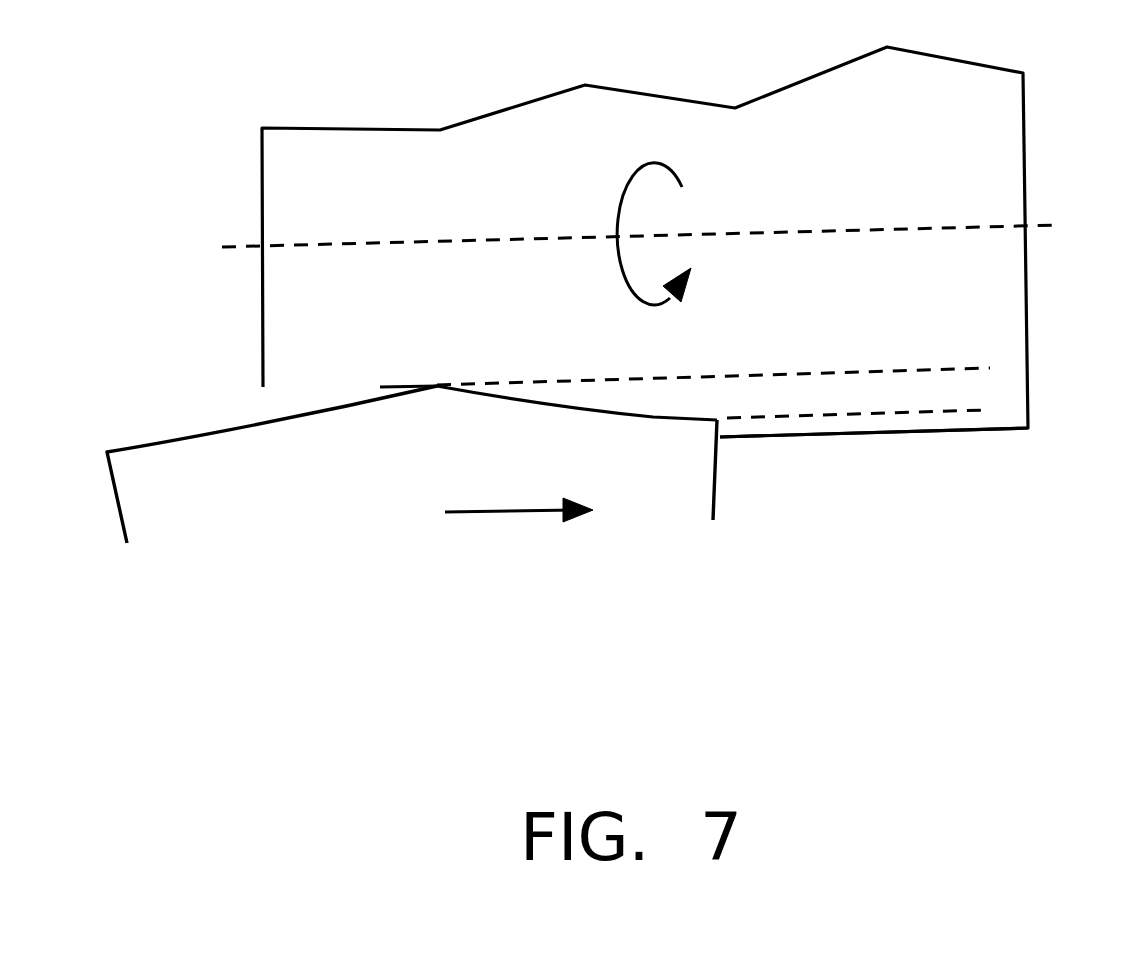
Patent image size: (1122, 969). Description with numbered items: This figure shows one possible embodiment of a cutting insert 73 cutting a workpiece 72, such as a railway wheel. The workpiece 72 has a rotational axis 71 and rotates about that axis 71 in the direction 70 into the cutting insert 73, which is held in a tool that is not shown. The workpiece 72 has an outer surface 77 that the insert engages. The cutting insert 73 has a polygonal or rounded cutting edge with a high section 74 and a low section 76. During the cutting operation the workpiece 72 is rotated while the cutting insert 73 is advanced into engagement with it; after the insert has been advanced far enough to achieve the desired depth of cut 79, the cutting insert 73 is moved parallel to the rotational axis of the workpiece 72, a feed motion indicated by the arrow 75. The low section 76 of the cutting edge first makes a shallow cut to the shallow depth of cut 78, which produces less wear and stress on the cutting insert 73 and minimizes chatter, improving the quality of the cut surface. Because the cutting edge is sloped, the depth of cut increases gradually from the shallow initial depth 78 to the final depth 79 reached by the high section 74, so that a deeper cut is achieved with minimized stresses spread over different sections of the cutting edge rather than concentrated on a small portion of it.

The direction of rotation 70 is at (612, 220).
The rotational axis 71 is at (245, 248).
The workpiece 72 is at (263, 304).
The cutting insert 73 is at (228, 467).
The high section 74 is at (407, 390).
The feed direction arrow 75 is at (498, 515).
The low section 76 is at (713, 425).
The outer surface 77 is at (930, 432).
The shallow depth of cut 78 is at (953, 410).
The desired depth of cut 79 is at (942, 370).